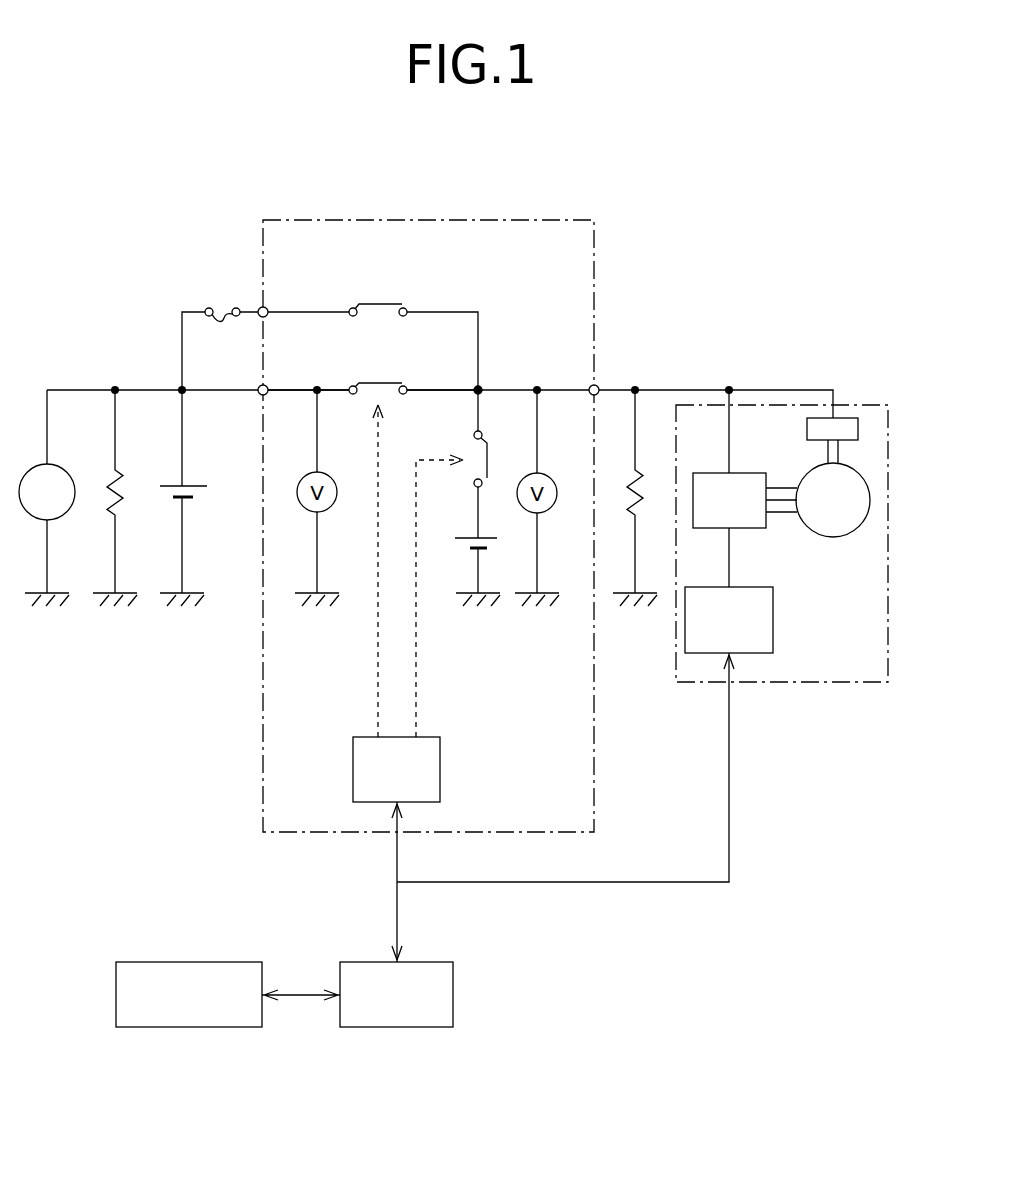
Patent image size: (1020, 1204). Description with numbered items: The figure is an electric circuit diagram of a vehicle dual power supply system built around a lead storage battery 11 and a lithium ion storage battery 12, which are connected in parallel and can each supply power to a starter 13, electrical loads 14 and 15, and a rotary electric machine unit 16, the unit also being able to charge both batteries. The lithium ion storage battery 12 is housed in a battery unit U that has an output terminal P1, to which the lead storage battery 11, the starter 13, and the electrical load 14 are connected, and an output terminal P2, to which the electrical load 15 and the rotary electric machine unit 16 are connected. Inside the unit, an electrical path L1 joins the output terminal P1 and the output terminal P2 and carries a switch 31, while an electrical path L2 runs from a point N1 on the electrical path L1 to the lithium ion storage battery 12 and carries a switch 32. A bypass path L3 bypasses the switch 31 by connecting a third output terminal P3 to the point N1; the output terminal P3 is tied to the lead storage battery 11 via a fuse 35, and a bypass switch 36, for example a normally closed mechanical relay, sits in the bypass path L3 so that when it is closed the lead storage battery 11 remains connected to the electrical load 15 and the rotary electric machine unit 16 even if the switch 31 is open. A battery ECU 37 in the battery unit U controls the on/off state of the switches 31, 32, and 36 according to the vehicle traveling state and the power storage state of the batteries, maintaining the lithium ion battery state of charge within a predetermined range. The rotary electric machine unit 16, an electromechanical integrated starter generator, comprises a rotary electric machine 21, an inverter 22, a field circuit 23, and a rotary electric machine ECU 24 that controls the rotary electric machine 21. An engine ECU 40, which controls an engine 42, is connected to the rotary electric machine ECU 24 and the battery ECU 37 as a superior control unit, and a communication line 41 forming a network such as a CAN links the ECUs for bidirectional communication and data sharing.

The battery unit U is at (571, 218).
The lead storage battery 11 is at (205, 486).
The lithium ion storage battery 12 is at (497, 533).
The starter 13 is at (68, 479).
The electrical load 14 is at (124, 480).
The electrical load 15 is at (640, 478).
The rotary electric machine unit 16 is at (870, 683).
The rotary electric machine 21 is at (868, 474).
The inverter 22 is at (748, 473).
The field circuit 23 is at (848, 417).
The rotary electric machine ECU 24 is at (775, 604).
The switch 31 is at (388, 383).
The switch 32 is at (488, 450).
The fuse 35 is at (207, 307).
The bypass switch 36 is at (387, 304).
The battery ECU 37 is at (442, 755).
The engine ECU 40 is at (438, 961).
The communication line 41 is at (663, 884).
The engine 42 is at (247, 961).
The output terminal P1 is at (261, 386).
The output terminal P2 is at (597, 386).
The output terminal P3 is at (261, 307).
The electrical path L1 is at (447, 389).
The electrical path L2 is at (477, 506).
The bypass path L3 is at (445, 311).
The point N1 is at (481, 388).